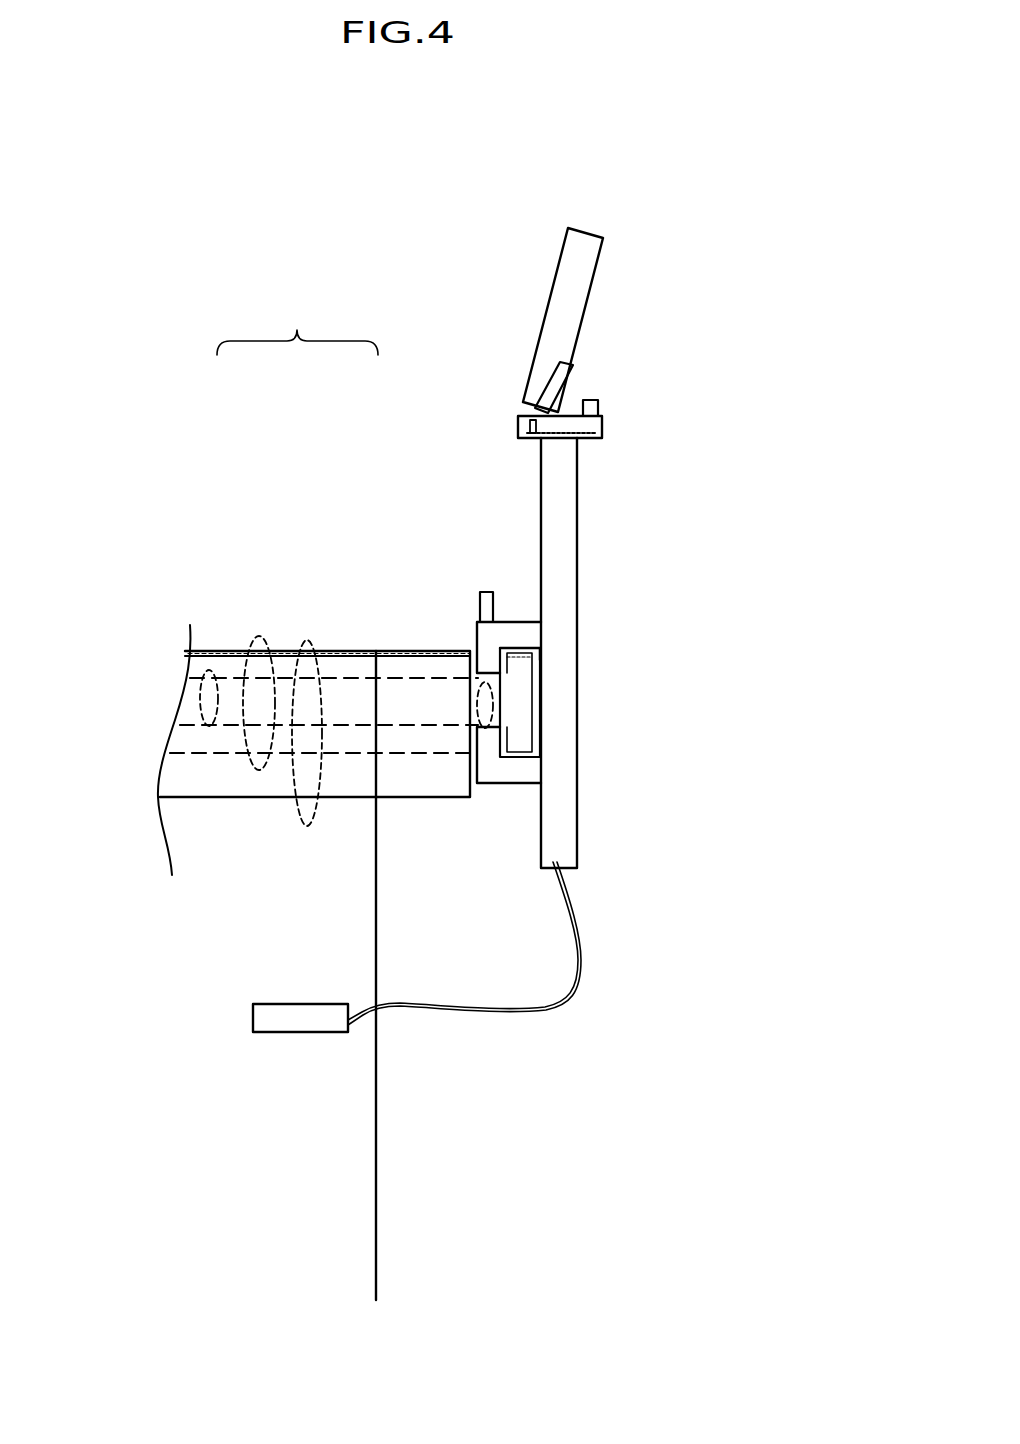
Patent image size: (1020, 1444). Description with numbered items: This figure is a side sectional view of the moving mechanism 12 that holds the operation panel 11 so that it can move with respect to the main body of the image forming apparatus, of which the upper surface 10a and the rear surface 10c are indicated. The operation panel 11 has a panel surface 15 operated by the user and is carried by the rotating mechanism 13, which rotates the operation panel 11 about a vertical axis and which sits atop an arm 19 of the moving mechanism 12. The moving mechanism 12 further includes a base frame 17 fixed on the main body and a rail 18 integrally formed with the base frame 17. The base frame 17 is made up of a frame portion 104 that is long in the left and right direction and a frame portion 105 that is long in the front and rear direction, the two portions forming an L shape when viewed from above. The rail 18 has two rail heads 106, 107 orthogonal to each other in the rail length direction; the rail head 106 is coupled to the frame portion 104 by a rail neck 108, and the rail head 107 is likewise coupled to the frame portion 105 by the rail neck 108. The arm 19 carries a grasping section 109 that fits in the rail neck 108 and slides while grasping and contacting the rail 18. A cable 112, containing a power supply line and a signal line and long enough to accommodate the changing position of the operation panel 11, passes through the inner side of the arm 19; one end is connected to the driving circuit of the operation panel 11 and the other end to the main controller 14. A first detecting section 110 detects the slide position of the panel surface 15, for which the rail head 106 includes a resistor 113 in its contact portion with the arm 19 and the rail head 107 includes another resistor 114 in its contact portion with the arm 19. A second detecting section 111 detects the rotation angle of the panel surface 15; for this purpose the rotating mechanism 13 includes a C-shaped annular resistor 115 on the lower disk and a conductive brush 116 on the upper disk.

The operation panel 11 is at (583, 248).
The panel surface 15 is at (548, 300).
The second detecting section 111 is at (598, 400).
The rotating mechanism 13 is at (590, 427).
The resistor 115 is at (588, 438).
The brush 116 is at (531, 420).
The arm 19 is at (577, 580).
The moving mechanism 12 is at (749, 600).
The grasping section 109 is at (518, 622).
The first detecting section 110 is at (480, 595).
The resistor 113 is at (540, 650).
The frame portion 104 is at (436, 653).
The upper surface 10a is at (202, 797).
The resistor 114 is at (465, 637).
The base frame 17 is at (307, 311).
The frame portion 105 is at (303, 640).
The rail 18 is at (460, 615).
The rail head 107 is at (250, 640).
The rail head 106 is at (515, 705).
The rail neck 108 is at (190, 652).
The rear surface 10c is at (377, 1088).
The main controller 14 is at (253, 1016).
The cable 112 is at (485, 1007).